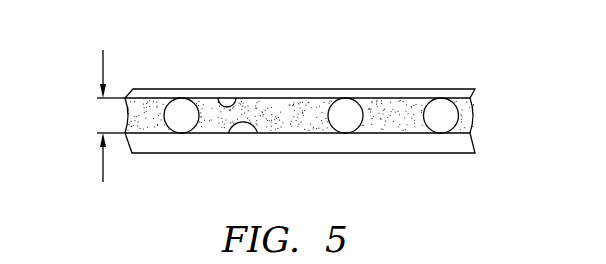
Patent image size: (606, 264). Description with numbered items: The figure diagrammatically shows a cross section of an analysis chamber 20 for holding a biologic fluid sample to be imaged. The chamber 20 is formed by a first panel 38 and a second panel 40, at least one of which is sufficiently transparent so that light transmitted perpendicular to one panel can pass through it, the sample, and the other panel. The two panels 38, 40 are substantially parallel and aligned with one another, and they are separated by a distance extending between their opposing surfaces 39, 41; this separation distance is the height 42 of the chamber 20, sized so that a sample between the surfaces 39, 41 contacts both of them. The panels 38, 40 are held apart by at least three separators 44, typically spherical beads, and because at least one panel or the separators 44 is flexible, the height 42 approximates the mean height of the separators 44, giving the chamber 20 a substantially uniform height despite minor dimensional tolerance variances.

The analysis chamber 20 is at (470, 80).
The first panel 38 is at (399, 94).
The opposing surface of first panel 39 is at (232, 99).
The second panel 40 is at (405, 145).
The opposing surface of second panel 41 is at (248, 130).
The height of the chamber 42 is at (102, 63).
The separators 44 is at (180, 118).